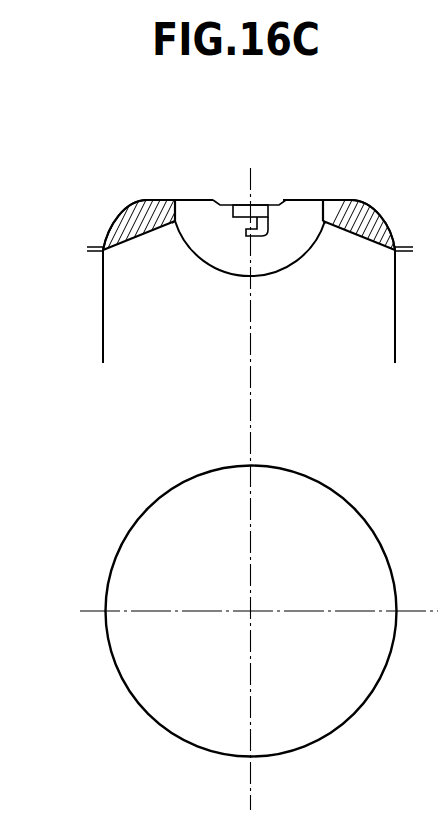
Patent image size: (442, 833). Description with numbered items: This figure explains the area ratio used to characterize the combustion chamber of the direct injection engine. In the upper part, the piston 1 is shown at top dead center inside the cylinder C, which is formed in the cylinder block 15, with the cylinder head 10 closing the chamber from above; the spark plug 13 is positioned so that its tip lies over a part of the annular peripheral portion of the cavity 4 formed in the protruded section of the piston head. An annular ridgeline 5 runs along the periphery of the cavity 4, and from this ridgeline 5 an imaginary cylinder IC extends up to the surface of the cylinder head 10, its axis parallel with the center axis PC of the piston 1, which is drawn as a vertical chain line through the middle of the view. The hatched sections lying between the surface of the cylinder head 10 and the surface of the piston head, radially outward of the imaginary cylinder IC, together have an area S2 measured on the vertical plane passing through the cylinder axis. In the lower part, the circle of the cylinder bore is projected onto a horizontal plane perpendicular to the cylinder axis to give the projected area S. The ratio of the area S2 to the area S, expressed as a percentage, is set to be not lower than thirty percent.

The piston 1 is at (120, 320).
The cavity 4 is at (270, 262).
The ridgeline 5 is at (326, 226).
The cylinder head 10 is at (102, 243).
The spark plug 13 is at (234, 200).
The cylinder block 15 is at (102, 282).
The projected area S is at (362, 545).
The area of hatched section S2 is at (357, 213).
The imaginary cylinder IC is at (323, 208).
The cylinder C is at (396, 336).
The center axis of the piston PC is at (251, 363).